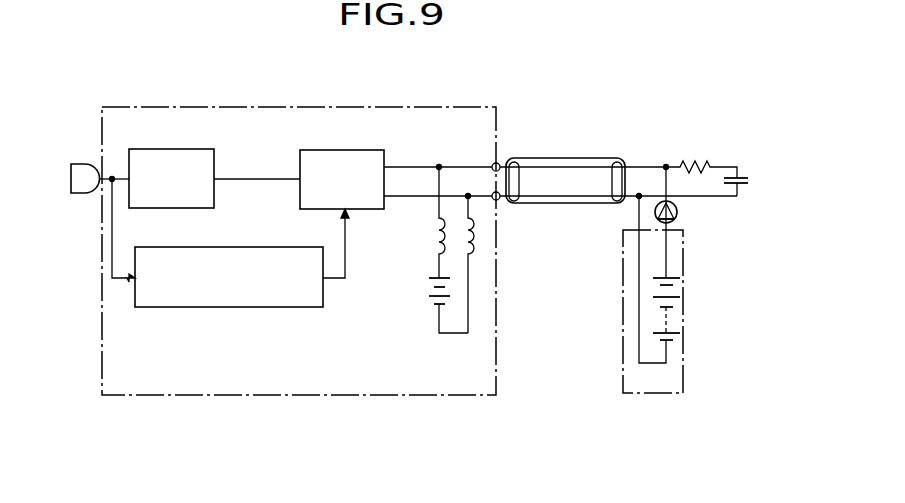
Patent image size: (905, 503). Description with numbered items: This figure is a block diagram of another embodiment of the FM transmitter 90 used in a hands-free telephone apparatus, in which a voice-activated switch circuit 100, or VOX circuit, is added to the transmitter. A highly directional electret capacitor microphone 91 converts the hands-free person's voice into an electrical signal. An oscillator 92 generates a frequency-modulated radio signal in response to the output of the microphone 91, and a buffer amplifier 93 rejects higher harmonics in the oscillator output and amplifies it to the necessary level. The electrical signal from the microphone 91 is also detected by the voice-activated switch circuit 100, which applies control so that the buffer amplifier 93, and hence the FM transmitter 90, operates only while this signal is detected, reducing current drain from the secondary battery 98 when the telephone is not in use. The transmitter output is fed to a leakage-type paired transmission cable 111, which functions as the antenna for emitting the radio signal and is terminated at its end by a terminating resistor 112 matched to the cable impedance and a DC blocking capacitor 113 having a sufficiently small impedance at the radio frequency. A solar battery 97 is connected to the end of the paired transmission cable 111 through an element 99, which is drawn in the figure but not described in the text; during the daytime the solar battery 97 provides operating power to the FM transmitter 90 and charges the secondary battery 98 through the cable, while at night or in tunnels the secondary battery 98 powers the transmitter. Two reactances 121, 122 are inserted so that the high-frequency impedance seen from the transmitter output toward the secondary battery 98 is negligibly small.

The FM transmitter 90 is at (452, 106).
The electret capacitor microphone 91 is at (80, 165).
The oscillator 92 is at (223, 140).
The buffer amplifier 93 is at (372, 151).
The voice-activated switch circuit 100 is at (280, 308).
The reactance 121 is at (433, 234).
The reactance 122 is at (479, 238).
The secondary battery 98 is at (434, 306).
The leakage-type paired transmission cable 111 is at (590, 158).
The terminating resistor 112 is at (697, 157).
The DC blocking capacitor 113 is at (740, 200).
The light emitting diode 99 is at (678, 214).
The solar battery 97 is at (684, 320).